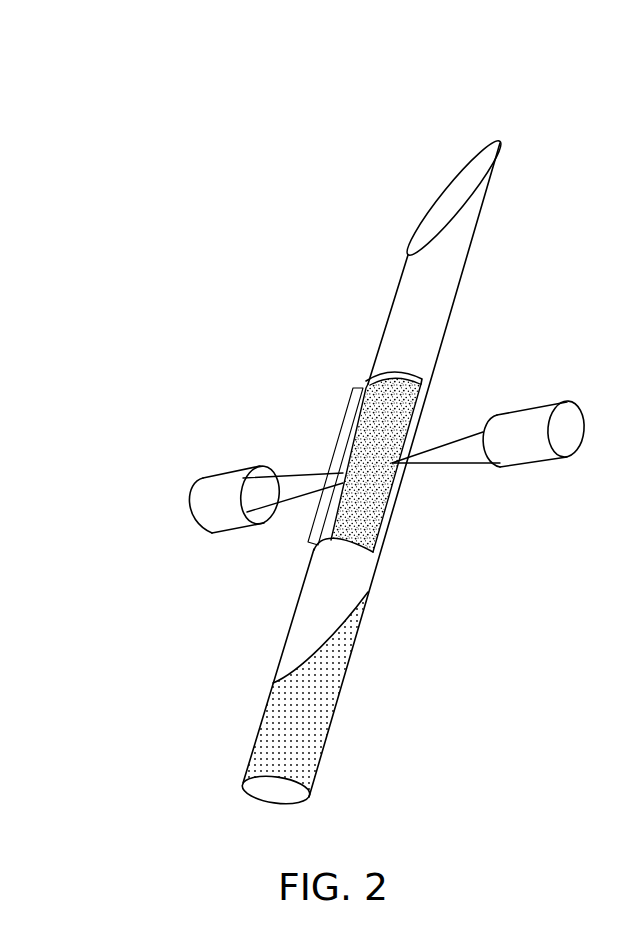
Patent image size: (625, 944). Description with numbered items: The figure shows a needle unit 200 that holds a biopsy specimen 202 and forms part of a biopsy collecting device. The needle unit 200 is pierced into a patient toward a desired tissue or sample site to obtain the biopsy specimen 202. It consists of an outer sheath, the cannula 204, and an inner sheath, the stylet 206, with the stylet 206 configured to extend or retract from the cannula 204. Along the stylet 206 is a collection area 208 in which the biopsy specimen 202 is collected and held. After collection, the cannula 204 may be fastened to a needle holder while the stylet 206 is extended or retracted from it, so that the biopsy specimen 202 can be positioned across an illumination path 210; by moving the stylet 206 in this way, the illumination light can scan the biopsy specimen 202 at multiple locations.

The needle unit 200 is at (158, 75).
The biopsy specimen 202 is at (373, 523).
The cannula 204 is at (318, 723).
The stylet 206 is at (458, 268).
The collection area 208 is at (345, 418).
The illumination path 210 is at (467, 446).